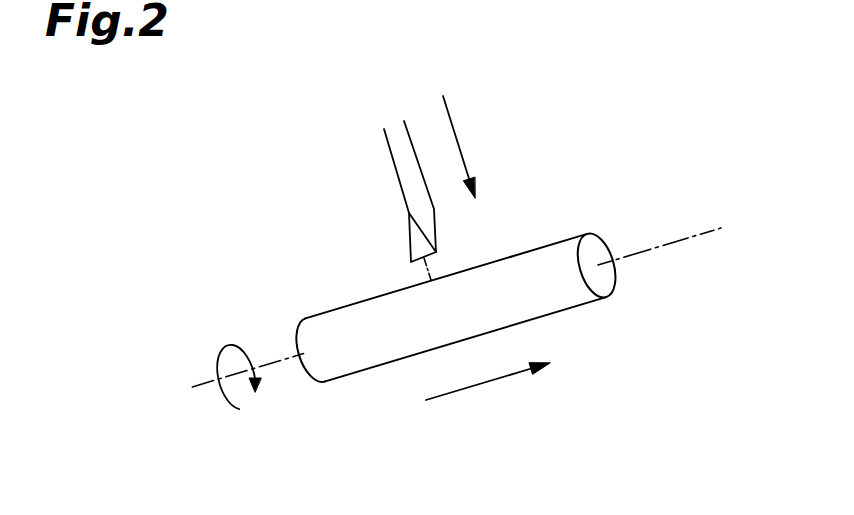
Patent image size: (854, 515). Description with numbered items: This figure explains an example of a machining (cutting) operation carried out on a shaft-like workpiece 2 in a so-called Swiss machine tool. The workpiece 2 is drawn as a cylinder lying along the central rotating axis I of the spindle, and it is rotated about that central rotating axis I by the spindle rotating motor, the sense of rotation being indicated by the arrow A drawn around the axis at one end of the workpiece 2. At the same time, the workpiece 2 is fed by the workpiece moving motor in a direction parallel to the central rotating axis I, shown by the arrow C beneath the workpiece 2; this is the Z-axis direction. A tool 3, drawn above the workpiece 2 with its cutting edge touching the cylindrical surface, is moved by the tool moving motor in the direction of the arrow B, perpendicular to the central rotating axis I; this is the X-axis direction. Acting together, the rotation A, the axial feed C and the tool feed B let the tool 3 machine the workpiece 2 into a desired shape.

The workpiece 2 is at (557, 302).
The tool 3 is at (412, 184).
The arrow A is at (240, 348).
The arrow B is at (455, 129).
The arrow C is at (443, 395).
The central rotating axis I is at (690, 237).